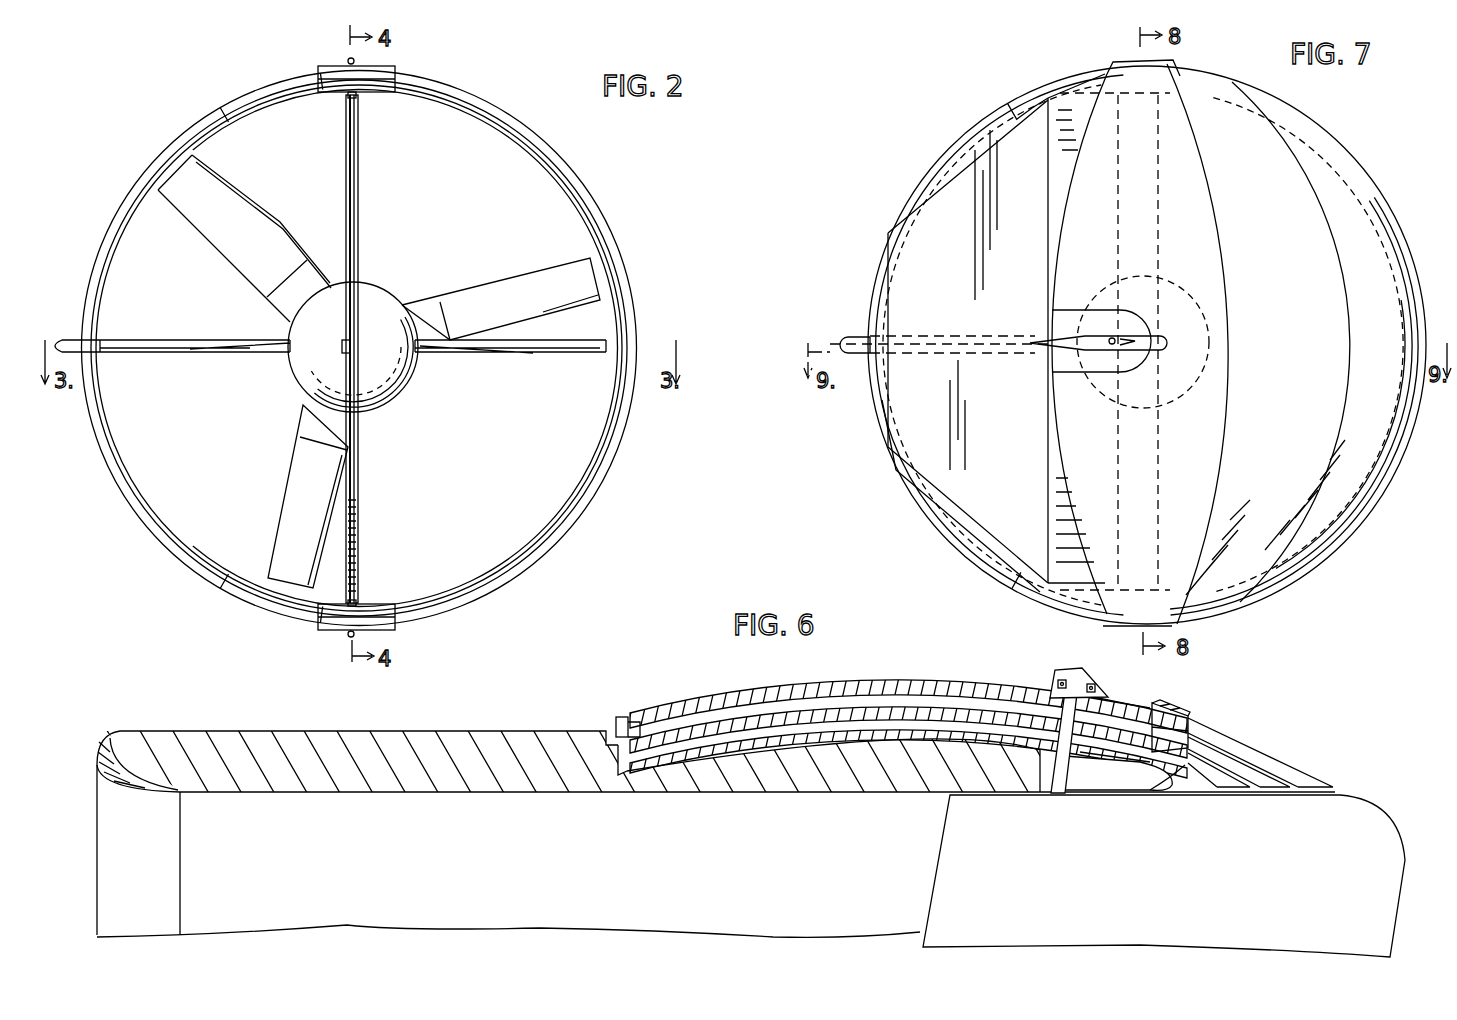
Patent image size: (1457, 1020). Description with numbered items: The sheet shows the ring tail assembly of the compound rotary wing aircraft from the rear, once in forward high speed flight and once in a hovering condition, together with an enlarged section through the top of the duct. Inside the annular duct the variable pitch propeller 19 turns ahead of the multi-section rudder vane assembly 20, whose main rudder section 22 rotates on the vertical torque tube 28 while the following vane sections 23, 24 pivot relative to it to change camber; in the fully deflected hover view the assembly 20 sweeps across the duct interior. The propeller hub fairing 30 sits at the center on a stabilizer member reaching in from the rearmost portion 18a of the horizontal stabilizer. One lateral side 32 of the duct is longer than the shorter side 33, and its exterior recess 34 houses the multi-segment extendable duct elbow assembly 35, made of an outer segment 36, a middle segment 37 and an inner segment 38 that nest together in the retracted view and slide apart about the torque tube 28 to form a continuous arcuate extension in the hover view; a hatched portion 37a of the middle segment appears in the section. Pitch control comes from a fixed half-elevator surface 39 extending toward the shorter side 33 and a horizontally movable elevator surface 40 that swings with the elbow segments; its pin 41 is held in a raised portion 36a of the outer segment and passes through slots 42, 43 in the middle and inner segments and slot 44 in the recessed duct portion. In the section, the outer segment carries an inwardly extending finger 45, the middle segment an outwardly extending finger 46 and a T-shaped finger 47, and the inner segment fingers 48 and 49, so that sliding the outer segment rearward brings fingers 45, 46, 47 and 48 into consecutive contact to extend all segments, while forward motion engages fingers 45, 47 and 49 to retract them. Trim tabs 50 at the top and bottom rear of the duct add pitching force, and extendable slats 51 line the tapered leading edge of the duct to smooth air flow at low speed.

In FIG. 2, the rearmost portion of the horizontal stabilizer 18a is at (70, 340).
In FIG. 7, the rearmost portion of the horizontal stabilizer 18a is at (852, 338).
In FIG. 2, the variable pitch propeller 19 is at (320, 275).
In FIG. 2, the rudder vane assembly 20 is at (381, 349).
In FIG. 7, the main rudder section 22 is at (1140, 236).
In FIG. 7, the vane section 23 is at (1068, 98).
In FIG. 2, the vane section 24 is at (358, 232).
In FIG. 7, the vane section 24 is at (958, 266).
In FIG. 2, the torque tube 28 is at (360, 60).
In FIG. 2, the propeller hub fairing 30 is at (388, 385).
In FIG. 6, the longer lateral side of the duct 32 is at (572, 735).
In FIG. 7, the shorter lateral side of the duct 33 is at (932, 498).
In FIG. 6, the recess 34 is at (775, 770).
In FIG. 2, the multi-segment extendable duct elbow assembly 35 is at (622, 282).
In FIG. 7, the outer elbow segment 36 is at (1206, 252).
In FIG. 6, the outer elbow segment 36 is at (1298, 780).
In FIG. 6, the raised portion of the outer elbow segment 36a is at (1008, 692).
In FIG. 7, the middle elbow segment 37 is at (1300, 270).
In FIG. 6, the middle elbow segment 37 is at (1255, 770).
In FIG. 6, the middle layer section 37a is at (930, 712).
In FIG. 7, the inner elbow segment 38 is at (1350, 184).
In FIG. 6, the inner elbow segment 38 is at (888, 730).
In FIG. 2, the half-elevator surface 39 is at (208, 344).
In FIG. 7, the half-elevator surface 39 is at (950, 356).
In FIG. 2, the movable elevator surface 40 is at (520, 360).
In FIG. 7, the movable elevator surface 40 is at (1092, 365).
In FIG. 6, the movable elevator surface 40 is at (1148, 872).
In FIG. 7, the pin 41 is at (1135, 356).
In FIG. 6, the pin 41 is at (1064, 680).
In FIG. 6, the slot 42 is at (1165, 728).
In FIG. 6, the slot 43 is at (1112, 740).
In FIG. 6, the slot 44 is at (1110, 780).
In FIG. 6, the inwardly extending finger 45 is at (650, 730).
In FIG. 6, the outwardly extending finger 46 is at (1188, 722).
In FIG. 6, the T-shaped finger 47 is at (619, 722).
In FIG. 6, the outwardly extending finger 48 is at (1180, 768).
In FIG. 6, the outwardly extending finger 49 is at (618, 780).
In FIG. 2, the trim tabs 50 is at (278, 95).
In FIG. 7, the trim tabs 50 is at (1022, 100).
In FIG. 6, the extendable slats 51 is at (104, 738).